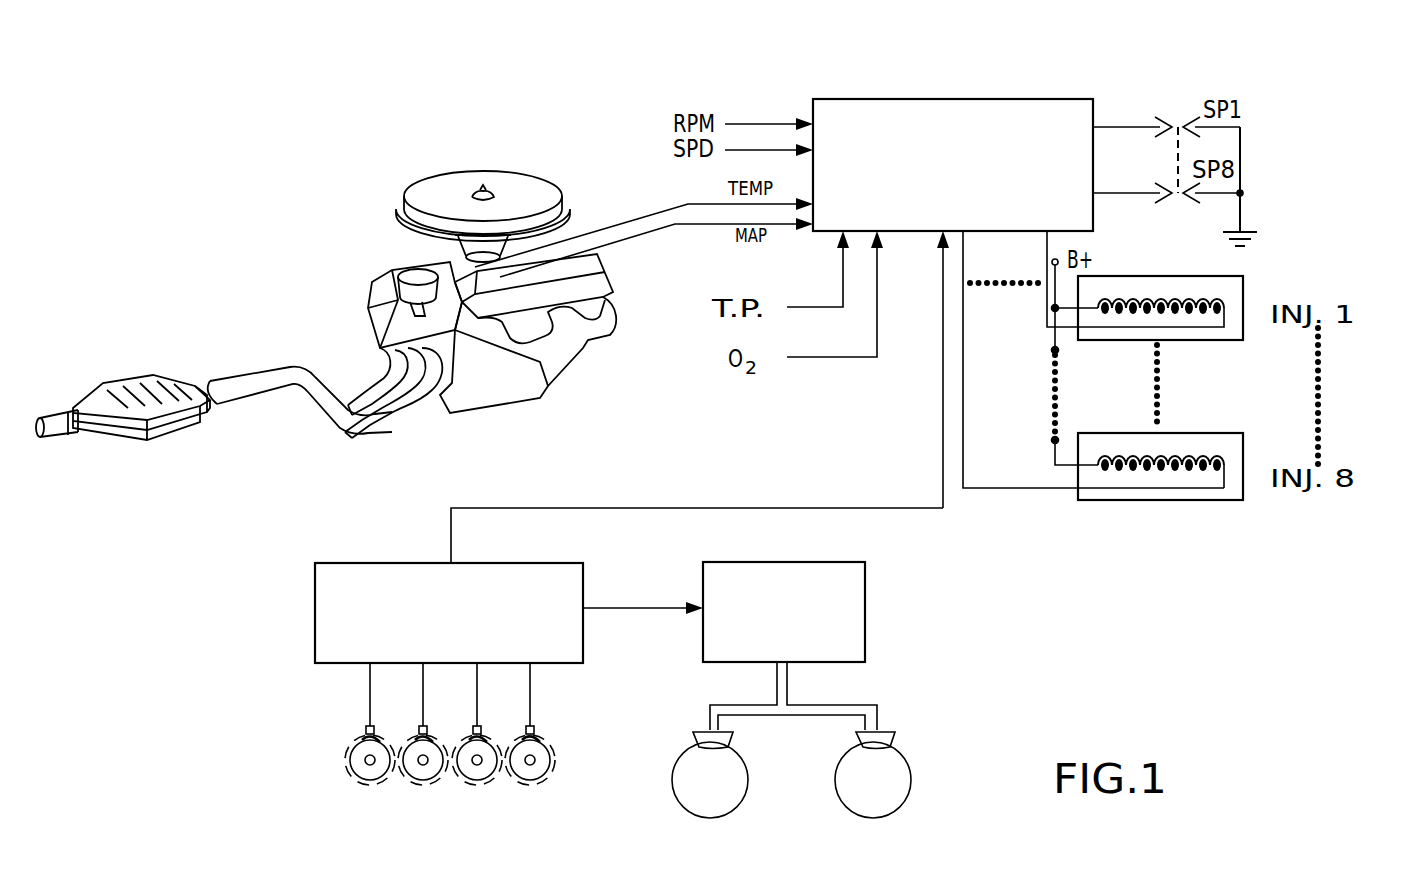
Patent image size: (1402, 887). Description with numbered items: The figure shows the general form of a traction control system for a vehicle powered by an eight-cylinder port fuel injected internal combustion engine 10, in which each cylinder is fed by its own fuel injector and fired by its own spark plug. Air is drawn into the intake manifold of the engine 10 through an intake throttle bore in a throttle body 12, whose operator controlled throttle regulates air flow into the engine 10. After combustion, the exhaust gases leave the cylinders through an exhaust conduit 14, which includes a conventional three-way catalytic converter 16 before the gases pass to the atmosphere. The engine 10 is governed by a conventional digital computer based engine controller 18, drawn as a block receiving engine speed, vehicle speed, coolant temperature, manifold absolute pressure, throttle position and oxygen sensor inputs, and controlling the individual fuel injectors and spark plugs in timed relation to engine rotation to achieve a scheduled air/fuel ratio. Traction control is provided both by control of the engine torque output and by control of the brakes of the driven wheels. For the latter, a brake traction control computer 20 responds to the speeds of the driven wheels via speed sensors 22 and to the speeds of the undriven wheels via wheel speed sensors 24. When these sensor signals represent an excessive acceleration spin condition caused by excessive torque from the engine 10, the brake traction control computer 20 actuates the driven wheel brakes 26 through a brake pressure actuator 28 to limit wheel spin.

The internal combustion engine 10 is at (625, 283).
The throttle body 12 is at (460, 262).
The exhaust conduit 14 is at (293, 380).
The three-way catalytic converter 16 is at (123, 378).
The engine controller 18 is at (927, 98).
The brake traction control computer 20 is at (387, 564).
The speed sensors 22 is at (410, 770).
The wheel speed sensors 24 is at (510, 768).
The driven wheel brakes 26 is at (735, 781).
The brake pressure actuator 28 is at (853, 597).